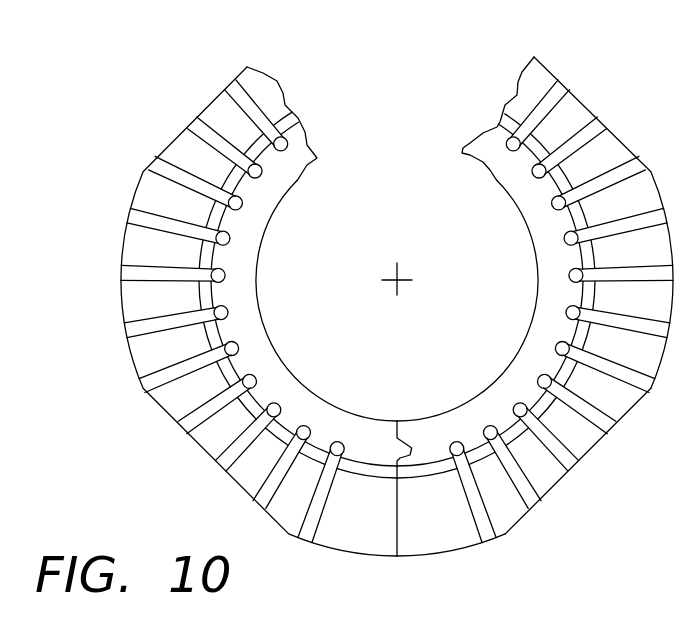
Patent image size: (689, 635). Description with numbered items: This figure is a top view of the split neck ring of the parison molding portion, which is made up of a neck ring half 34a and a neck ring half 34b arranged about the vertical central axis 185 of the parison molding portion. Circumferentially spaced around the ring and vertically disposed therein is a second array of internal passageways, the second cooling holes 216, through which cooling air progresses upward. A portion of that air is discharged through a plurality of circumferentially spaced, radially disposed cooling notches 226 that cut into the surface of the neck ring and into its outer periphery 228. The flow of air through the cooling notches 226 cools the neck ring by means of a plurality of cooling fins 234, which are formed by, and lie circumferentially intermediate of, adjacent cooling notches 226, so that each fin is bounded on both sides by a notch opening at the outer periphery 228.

The neck ring half 34a is at (270, 222).
The neck ring half 34b is at (525, 223).
The central axis 185 is at (397, 282).
The second cooling holes 216 is at (492, 426).
The cooling notches 226 is at (488, 537).
The outer periphery 228 is at (545, 492).
The cooling fins 234 is at (505, 510).